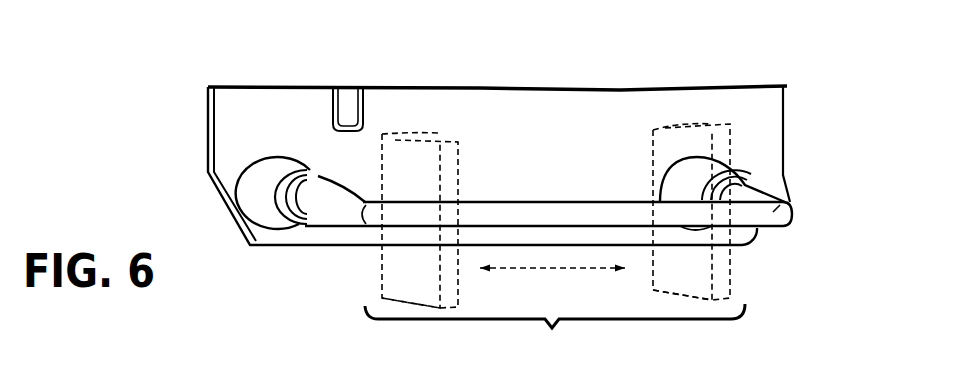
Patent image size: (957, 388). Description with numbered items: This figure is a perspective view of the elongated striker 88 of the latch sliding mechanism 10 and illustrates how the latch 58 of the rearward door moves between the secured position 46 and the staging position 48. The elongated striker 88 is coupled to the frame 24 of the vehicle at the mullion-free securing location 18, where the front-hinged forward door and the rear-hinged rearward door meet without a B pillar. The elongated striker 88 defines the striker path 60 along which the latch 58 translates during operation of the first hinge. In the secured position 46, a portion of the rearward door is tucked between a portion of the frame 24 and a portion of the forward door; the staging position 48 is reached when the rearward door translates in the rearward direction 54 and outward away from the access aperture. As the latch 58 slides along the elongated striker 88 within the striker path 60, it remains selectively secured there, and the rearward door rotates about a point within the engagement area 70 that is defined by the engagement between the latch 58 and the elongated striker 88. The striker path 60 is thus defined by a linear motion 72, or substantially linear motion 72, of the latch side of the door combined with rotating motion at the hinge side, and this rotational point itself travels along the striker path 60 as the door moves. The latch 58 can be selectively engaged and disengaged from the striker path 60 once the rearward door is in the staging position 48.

The latch sliding mechanism 10 is at (671, 74).
The mullion-free securing location 18 is at (457, 77).
The frame 24 is at (253, 135).
The secured position 46 is at (742, 282).
The staging position 48 is at (365, 290).
The rearward direction 54 is at (500, 160).
The latch 58 is at (387, 264).
The striker path 60 is at (470, 193).
The engagement area 70 is at (555, 329).
The linear motion 72 is at (532, 268).
The elongated striker 88 is at (773, 210).